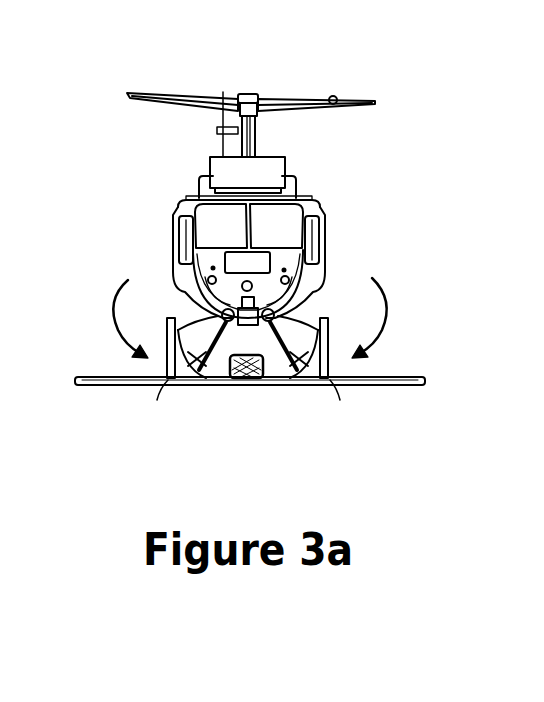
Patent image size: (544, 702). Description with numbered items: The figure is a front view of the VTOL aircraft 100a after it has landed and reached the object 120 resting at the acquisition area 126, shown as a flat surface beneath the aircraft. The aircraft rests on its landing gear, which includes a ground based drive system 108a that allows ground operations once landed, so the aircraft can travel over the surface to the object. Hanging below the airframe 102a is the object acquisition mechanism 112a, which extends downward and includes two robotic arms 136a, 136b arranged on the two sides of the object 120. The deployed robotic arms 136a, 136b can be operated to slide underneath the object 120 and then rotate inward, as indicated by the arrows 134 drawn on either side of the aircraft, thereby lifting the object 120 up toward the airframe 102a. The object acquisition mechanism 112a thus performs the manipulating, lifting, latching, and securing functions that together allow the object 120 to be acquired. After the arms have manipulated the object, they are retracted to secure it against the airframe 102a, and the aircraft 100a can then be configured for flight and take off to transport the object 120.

The VTOL aircraft 100a is at (88, 58).
The airframe 102a is at (172, 209).
The ground based drive system 108a is at (327, 318).
The object acquisition mechanism 112a is at (222, 316).
The object 120 is at (243, 383).
The acquisition area 126 is at (423, 377).
The arrows 134 is at (115, 318).
The robotic arm 136a is at (162, 380).
The robotic arm 136b is at (333, 380).